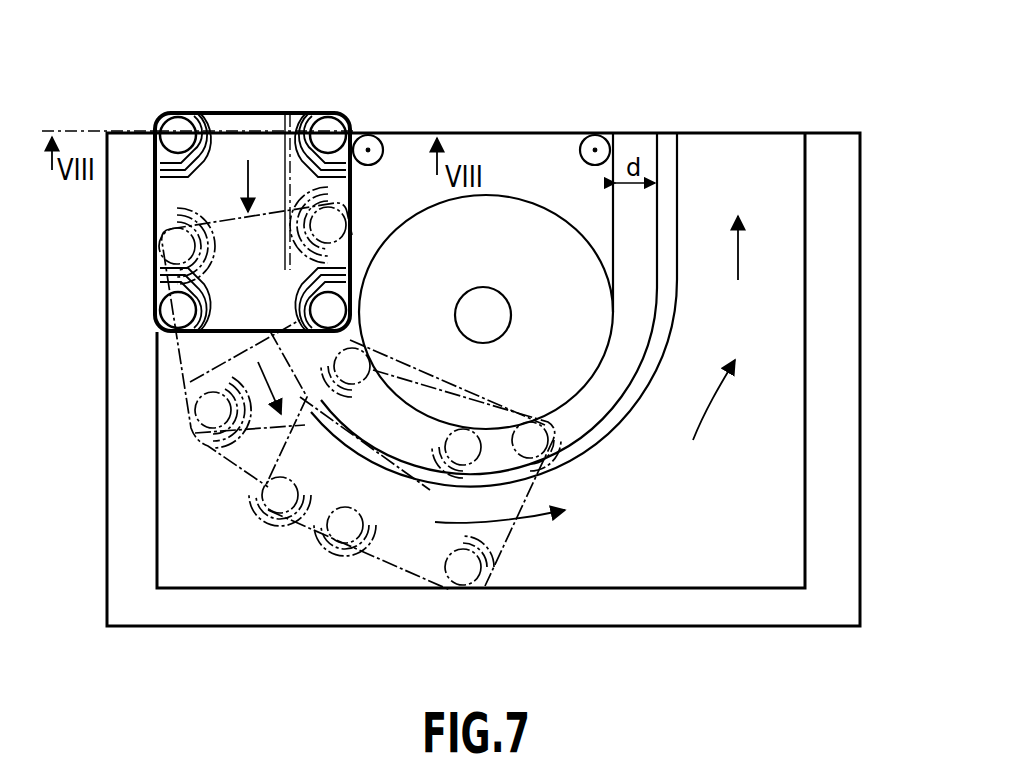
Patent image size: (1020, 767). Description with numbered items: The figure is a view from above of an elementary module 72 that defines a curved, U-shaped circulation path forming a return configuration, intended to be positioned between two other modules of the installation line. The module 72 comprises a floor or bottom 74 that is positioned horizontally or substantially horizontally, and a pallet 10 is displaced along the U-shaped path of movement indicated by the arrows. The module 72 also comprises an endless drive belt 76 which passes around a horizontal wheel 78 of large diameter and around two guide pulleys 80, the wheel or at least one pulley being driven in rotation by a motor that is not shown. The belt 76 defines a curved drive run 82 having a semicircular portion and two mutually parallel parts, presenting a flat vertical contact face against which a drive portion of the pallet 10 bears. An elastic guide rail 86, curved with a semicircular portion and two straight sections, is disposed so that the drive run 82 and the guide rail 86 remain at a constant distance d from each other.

The pallet 10 is at (257, 152).
The elementary module 72 is at (100, 128).
The floor or bottom 74 is at (780, 473).
The endless drive belt 76 is at (616, 236).
The horizontal wheel 78 is at (503, 208).
The guide pulleys 80 is at (369, 146).
The curved drive run 82 is at (577, 398).
The elastic guide rail 86 is at (662, 162).